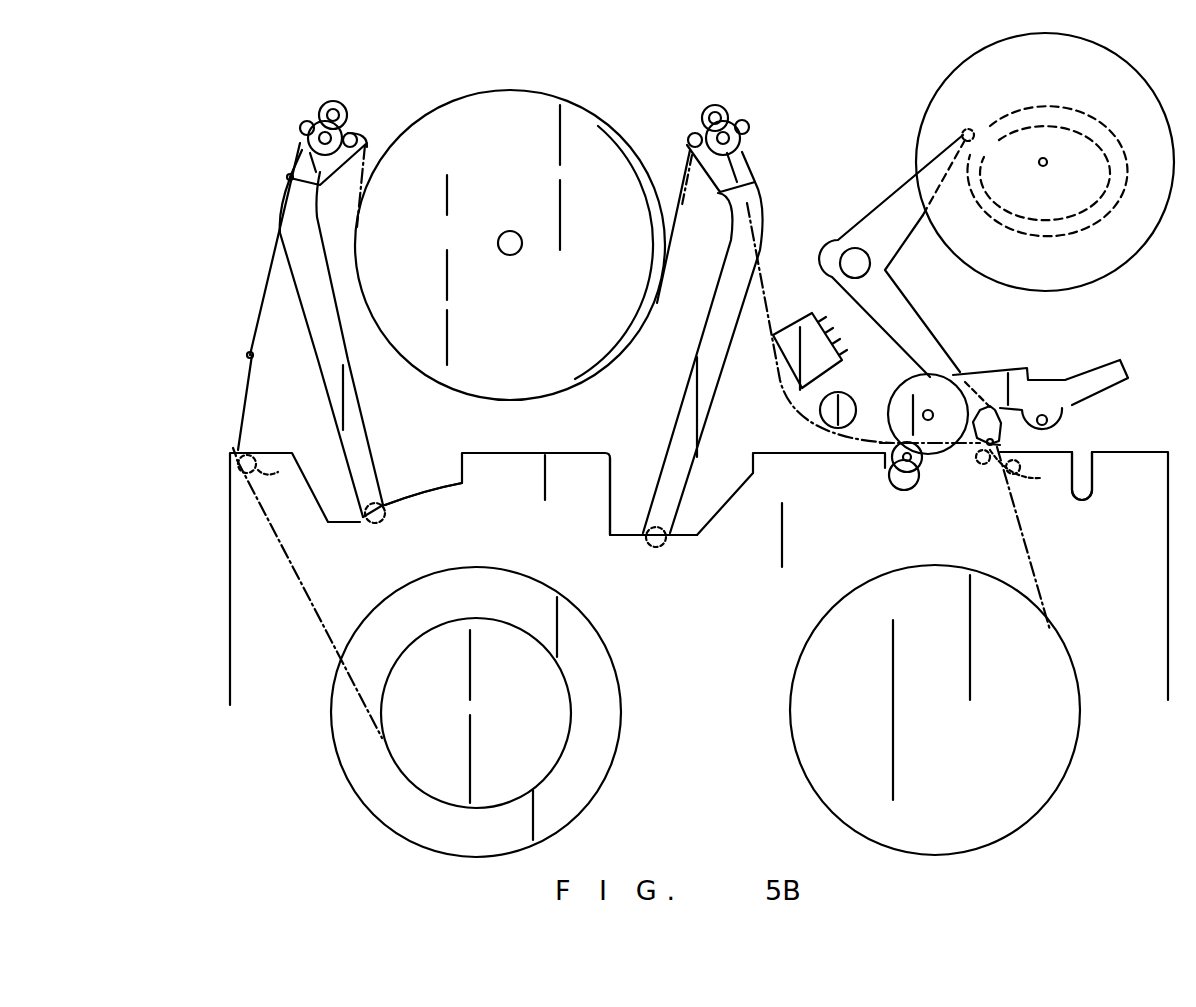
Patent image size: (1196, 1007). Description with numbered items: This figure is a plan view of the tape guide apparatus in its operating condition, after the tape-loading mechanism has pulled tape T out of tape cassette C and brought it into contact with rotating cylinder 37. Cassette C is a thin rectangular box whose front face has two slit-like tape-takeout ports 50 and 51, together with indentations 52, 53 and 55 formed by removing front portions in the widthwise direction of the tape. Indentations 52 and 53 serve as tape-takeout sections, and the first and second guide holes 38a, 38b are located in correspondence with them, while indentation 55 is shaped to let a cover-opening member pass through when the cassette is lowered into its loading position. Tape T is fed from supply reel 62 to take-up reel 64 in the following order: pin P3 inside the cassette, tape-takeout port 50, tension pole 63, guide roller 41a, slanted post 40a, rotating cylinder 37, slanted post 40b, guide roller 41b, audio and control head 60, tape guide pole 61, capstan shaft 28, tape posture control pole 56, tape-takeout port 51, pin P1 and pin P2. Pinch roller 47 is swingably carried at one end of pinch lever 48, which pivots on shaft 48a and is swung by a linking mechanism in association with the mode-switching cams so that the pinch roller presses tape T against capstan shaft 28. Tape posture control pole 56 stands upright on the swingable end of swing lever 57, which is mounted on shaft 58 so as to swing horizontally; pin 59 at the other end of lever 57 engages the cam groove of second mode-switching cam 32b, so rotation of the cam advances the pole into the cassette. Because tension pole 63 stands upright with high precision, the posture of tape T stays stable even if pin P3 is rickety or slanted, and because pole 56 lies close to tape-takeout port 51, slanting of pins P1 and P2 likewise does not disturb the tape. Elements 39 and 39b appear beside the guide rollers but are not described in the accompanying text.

The capstan shaft 28 is at (888, 472).
The second mode-switching cam 32b is at (947, 73).
The rotating cylinder 37 is at (503, 90).
The first guide hole 38a is at (292, 268).
The second guide hole 38b is at (670, 448).
The guide pulley 39 is at (300, 128).
The guide pulley 39b is at (740, 117).
The slanted post 40a is at (365, 140).
The slanted post 40b is at (690, 138).
The guide roller 41a is at (318, 122).
The guide roller 41b is at (705, 118).
The pinch roller 47 is at (962, 368).
The pinch lever 48 is at (1127, 370).
The shaft 48a is at (1050, 407).
The tape-takeout port 50 is at (233, 448).
The tape-takeout port 51 is at (1000, 443).
The indentation 52 is at (627, 525).
The indentation 53 is at (450, 468).
The indentation 55 is at (1093, 492).
The tape posture control pole 56 is at (1063, 438).
The swing lever 57 is at (833, 252).
The shaft 58 is at (855, 247).
The pin 59 is at (963, 135).
The audio and control head 60 is at (793, 333).
The tape guide pole 61 is at (855, 400).
The supply reel 62 is at (610, 733).
The tension pole 63 is at (250, 355).
The take-up reel 64 is at (815, 740).
The tape cassette C is at (230, 587).
The tape T is at (242, 397).
The pin P1 is at (978, 467).
The pin P2 is at (1020, 474).
The pin P3 is at (267, 482).